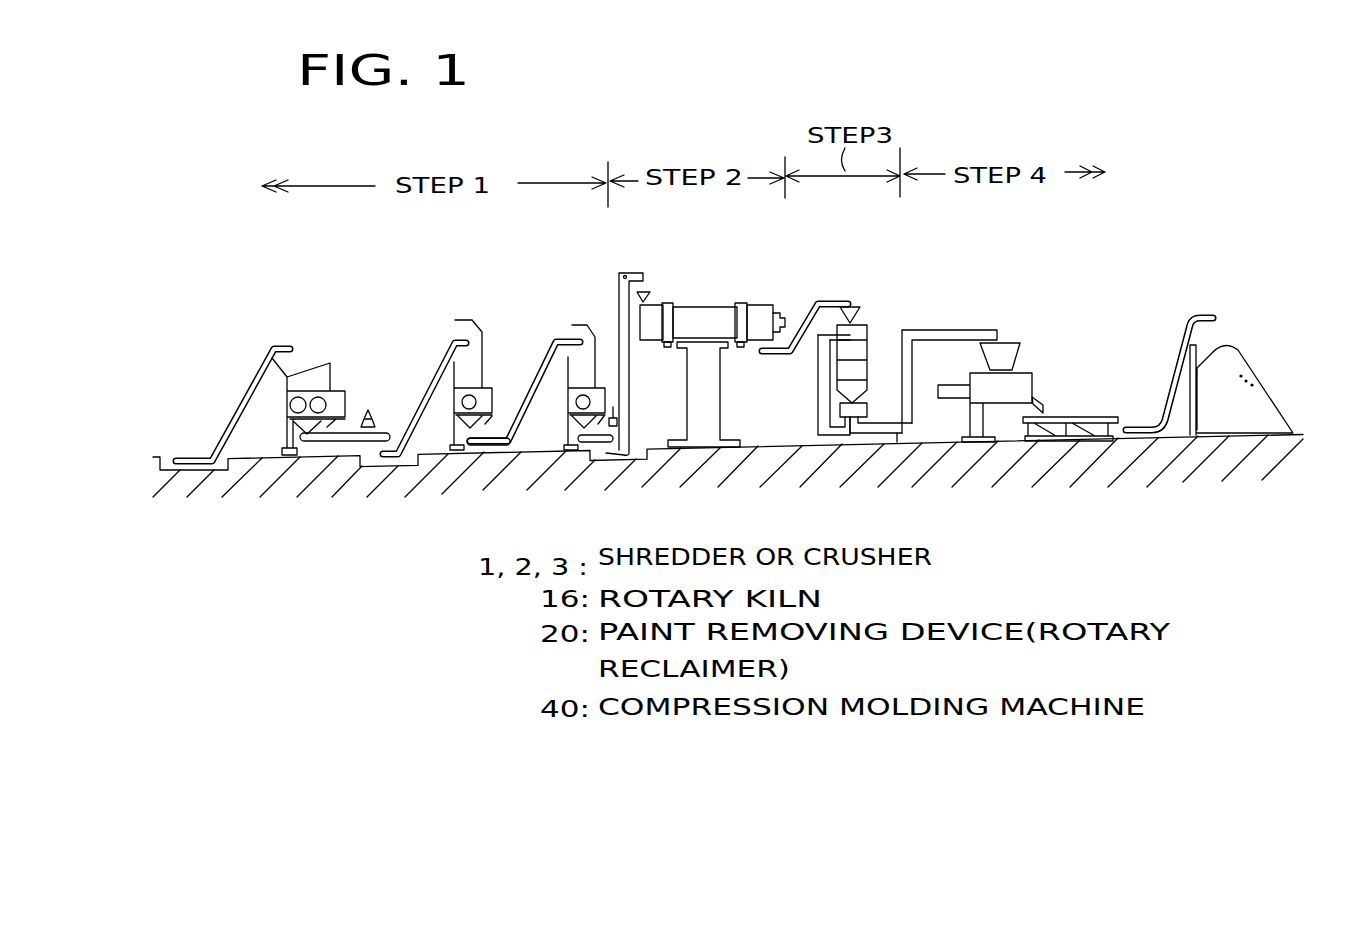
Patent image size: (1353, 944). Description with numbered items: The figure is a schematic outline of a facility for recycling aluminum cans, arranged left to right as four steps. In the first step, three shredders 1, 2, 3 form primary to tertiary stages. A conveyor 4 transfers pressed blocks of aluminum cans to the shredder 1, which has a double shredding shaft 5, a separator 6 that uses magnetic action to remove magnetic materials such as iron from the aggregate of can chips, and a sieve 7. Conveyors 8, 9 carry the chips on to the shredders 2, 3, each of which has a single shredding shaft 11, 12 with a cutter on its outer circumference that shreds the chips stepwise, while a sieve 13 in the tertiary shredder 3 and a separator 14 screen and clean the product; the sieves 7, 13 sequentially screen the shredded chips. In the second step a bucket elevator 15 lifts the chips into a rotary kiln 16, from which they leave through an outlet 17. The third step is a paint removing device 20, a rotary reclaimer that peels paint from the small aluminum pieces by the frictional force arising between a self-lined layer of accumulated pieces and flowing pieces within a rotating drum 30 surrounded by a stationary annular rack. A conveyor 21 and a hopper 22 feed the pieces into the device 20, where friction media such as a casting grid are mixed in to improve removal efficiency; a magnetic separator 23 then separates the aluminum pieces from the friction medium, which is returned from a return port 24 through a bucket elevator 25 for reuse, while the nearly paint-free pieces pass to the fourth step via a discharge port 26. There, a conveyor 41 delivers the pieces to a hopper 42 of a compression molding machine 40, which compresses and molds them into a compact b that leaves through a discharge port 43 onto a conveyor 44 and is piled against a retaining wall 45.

The shredder 1 is at (331, 355).
The shredder 2 is at (428, 305).
The shredder 3 is at (601, 348).
The conveyor 4 is at (244, 393).
The double shredding shaft 5 is at (328, 406).
The separator 6 is at (373, 412).
The sieve 7 is at (378, 432).
The conveyor 8 is at (440, 362).
The conveyor 9 is at (540, 355).
The single shredding shaft 11 is at (477, 404).
The single shredding shaft 12 is at (604, 394).
The sieve 13 is at (578, 433).
The separator 14 is at (618, 418).
The bucket elevator 15 is at (620, 293).
The rotary kiln 16 is at (707, 306).
The outlet 17 is at (757, 345).
The paint removing device 20 is at (842, 330).
The conveyor 21 is at (805, 312).
The hopper 22 is at (858, 302).
The magnetic separator 23 is at (858, 403).
The return port 24 is at (838, 420).
The bucket elevator 25 is at (820, 371).
The discharge port 26 is at (860, 420).
The rotary drum 30 is at (863, 362).
The compression molding machine 40 is at (1014, 335).
The conveyor 41 is at (945, 330).
The hopper 42 is at (1013, 343).
The discharge port 43 is at (1045, 400).
The conveyor 44 is at (1105, 417).
The retaining wall 45 is at (1200, 350).
The compact b is at (1258, 378).